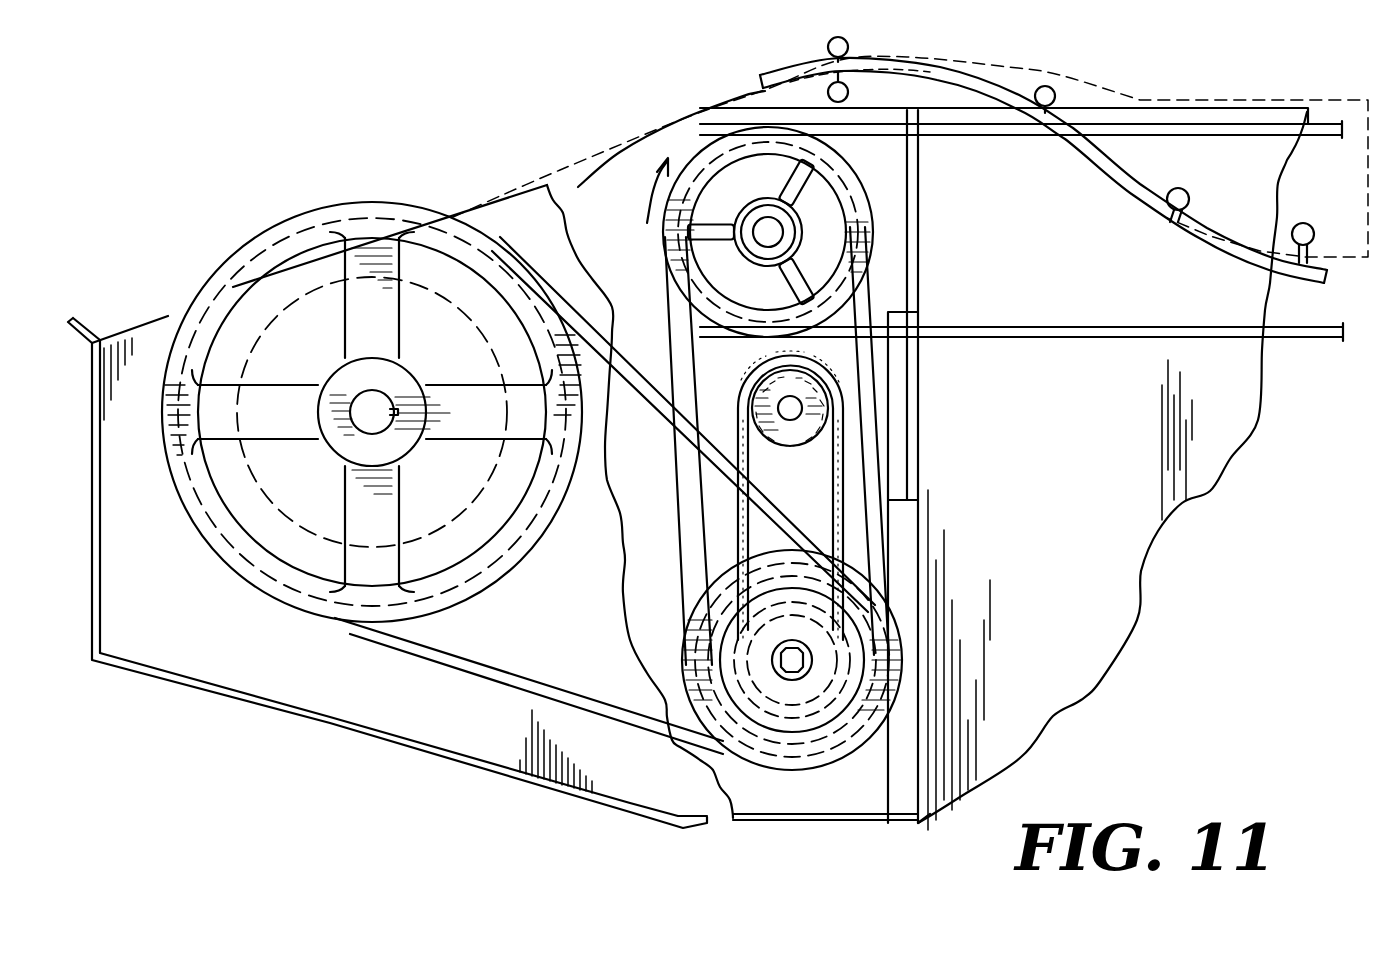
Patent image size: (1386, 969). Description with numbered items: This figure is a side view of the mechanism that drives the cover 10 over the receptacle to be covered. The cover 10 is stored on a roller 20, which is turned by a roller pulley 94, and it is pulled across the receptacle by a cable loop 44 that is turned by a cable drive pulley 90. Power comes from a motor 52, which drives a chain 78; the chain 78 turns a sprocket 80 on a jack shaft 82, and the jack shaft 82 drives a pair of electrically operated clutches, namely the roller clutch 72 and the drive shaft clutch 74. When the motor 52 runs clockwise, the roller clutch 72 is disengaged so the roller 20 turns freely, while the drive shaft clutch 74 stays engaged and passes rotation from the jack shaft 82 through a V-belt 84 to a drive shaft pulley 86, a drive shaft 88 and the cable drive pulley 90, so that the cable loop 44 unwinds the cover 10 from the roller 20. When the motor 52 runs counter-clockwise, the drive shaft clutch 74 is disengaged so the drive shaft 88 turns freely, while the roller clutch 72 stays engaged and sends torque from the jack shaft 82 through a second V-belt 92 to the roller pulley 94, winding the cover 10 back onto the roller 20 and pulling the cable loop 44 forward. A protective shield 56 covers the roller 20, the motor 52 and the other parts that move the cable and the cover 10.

The cover 10 is at (1288, 98).
The roller 20 is at (292, 488).
The cable loop 44 is at (1046, 334).
The motor 52 is at (740, 360).
The protective shield 56 is at (268, 716).
The roller clutch 72 is at (835, 770).
The drive shaft clutch 74 is at (876, 690).
The chain 78 is at (845, 472).
The sprocket 80 is at (790, 436).
The jack shaft 82 is at (832, 652).
The V-belt 84 is at (690, 479).
The drive shaft pulley 86 is at (665, 256).
The drive shaft 88 is at (768, 226).
The cable drive pulley 90 is at (857, 198).
The V-belt 92 is at (495, 672).
The roller pulley 94 is at (515, 572).